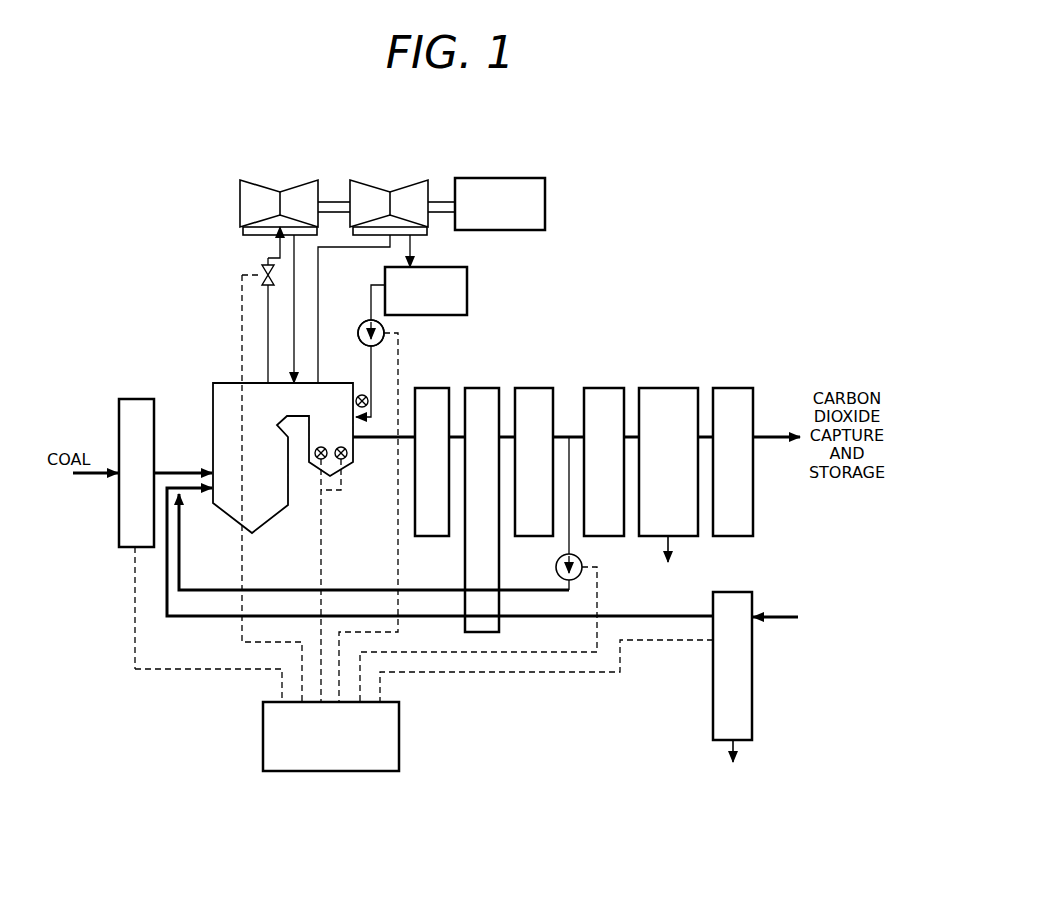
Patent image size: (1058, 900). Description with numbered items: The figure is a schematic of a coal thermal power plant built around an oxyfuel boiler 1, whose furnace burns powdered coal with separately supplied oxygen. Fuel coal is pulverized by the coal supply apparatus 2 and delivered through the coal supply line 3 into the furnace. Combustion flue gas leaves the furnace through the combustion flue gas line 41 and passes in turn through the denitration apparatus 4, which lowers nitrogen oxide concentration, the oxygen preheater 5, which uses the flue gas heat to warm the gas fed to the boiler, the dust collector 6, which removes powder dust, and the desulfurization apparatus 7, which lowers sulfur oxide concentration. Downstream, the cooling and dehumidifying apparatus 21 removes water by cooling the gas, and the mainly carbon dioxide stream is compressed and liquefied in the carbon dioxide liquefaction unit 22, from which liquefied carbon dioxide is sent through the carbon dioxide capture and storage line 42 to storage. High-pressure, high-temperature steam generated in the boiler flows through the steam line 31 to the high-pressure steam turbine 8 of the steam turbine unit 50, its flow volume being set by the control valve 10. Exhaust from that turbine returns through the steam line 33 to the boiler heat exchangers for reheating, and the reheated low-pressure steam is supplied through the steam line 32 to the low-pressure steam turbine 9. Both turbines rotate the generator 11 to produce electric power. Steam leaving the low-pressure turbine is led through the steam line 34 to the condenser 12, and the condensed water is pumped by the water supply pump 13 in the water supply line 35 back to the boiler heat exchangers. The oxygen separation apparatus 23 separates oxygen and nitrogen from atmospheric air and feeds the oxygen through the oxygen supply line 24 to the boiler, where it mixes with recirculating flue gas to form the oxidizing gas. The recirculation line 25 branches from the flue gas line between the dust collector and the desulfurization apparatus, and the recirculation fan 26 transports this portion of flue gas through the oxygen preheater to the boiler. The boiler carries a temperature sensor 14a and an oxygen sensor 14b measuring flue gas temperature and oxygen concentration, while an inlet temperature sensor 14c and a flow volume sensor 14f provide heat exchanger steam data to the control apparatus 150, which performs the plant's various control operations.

The oxyfuel boiler 1 is at (220, 382).
The coal supply apparatus 2 is at (136, 398).
The coal supply line 3 is at (172, 471).
The denitration apparatus 4 is at (432, 388).
The oxygen preheater 5 is at (482, 388).
The dust collector 6 is at (536, 388).
The desulfurization apparatus 7 is at (608, 388).
The high-pressure steam turbine 8 is at (249, 178).
The low-pressure steam turbine 9 is at (359, 178).
The control valve 10 is at (262, 270).
The generator 11 is at (546, 192).
The condenser 12 is at (468, 283).
The water supply pump 13 is at (361, 327).
The temperature sensor 14a is at (323, 463).
The oxygen sensor 14b is at (343, 461).
The inlet temperature sensor 14c is at (359, 349).
The flow volume sensor 14f is at (364, 394).
The cooling and dehumidifying apparatus 21 is at (666, 388).
The carbon dioxide liquefaction unit 22 is at (733, 388).
The oxygen separation apparatus 23 is at (733, 592).
The oxygen supply line 24 is at (188, 619).
The recirculation line 25 is at (183, 556).
The recirculation fan 26 is at (584, 554).
The steam line 31 is at (268, 320).
The steam line 32 is at (318, 270).
The steam line 33 is at (295, 331).
The steam line 34 is at (414, 252).
The water supply line 35 is at (373, 374).
The combustion flue gas line 41 is at (376, 440).
The carbon dioxide capture and storage line 42 is at (767, 432).
The steam turbine unit 50 is at (306, 141).
The control apparatus 150 is at (400, 722).